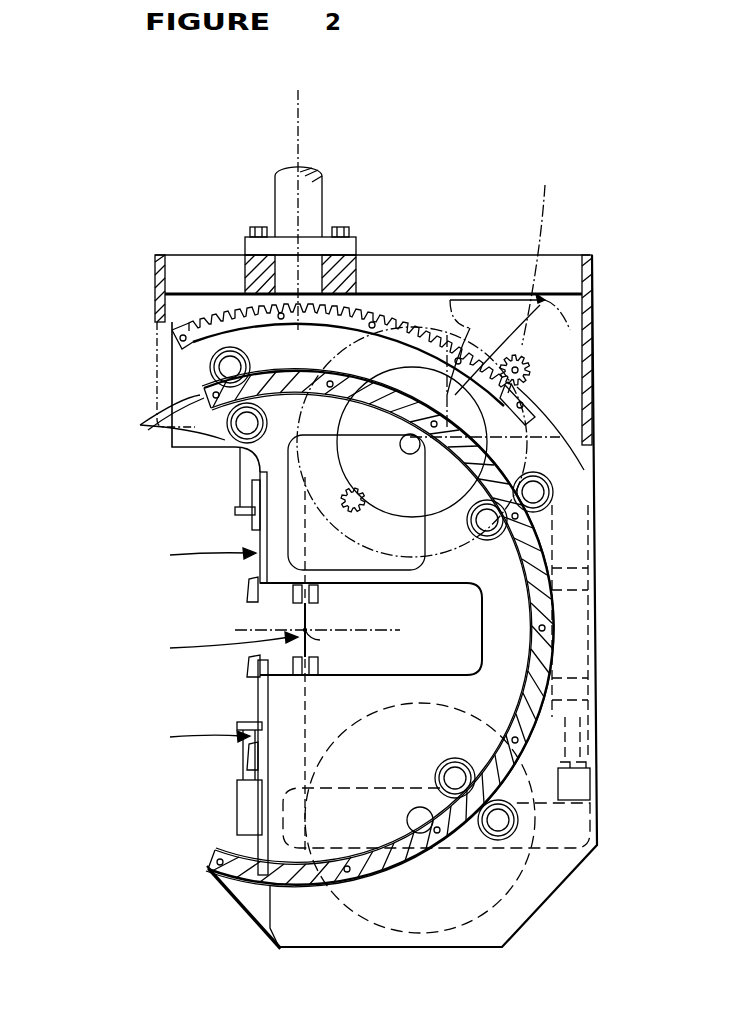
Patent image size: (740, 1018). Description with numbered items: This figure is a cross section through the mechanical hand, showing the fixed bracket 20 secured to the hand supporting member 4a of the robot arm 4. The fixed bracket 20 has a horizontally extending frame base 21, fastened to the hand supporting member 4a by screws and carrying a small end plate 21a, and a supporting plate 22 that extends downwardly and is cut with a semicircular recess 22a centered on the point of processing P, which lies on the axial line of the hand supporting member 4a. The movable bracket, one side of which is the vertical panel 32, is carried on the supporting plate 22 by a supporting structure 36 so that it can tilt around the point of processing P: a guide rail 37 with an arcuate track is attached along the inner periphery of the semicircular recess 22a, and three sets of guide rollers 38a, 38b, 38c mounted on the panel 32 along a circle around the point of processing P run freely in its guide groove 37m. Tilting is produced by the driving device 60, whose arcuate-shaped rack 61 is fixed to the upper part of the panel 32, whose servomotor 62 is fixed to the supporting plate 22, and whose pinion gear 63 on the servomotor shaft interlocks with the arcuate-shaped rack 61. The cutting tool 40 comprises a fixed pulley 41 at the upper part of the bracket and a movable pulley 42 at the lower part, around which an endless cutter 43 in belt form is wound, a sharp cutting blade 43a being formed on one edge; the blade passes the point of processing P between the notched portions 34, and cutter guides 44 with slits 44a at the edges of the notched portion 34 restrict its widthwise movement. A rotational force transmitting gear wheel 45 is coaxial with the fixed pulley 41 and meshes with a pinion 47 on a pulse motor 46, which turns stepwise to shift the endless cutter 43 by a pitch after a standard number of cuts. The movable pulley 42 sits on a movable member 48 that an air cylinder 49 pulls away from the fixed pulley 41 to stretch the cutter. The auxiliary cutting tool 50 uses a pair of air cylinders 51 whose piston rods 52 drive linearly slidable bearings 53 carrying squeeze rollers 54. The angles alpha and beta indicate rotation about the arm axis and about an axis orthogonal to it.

The fixed bracket 20 is at (600, 268).
The robot arm 4 is at (318, 186).
The hand supporting member 4a is at (248, 242).
The frame base 21 is at (437, 252).
The rack end plate 21a is at (376, 254).
The supporting plate 22 is at (594, 332).
The semicircular recess 22a is at (212, 856).
The panel 32 is at (582, 466).
The pinion gear 63 is at (530, 370).
The driving device 60 is at (547, 298).
The arcuate-shaped rack 61 is at (452, 330).
The rotational force transmitting gear wheel 45 is at (480, 325).
The servomotor 62 is at (538, 248).
The fixed pulley 41 is at (350, 365).
The pinion 47 is at (345, 498).
The pulse motor 46 is at (258, 522).
The auxiliary cutting tool 50 is at (186, 647).
The notched portion 34 is at (432, 680).
The cutter guide 44 is at (300, 598).
The slit 44a is at (320, 640).
The point of processing P is at (308, 628).
The cutting tool 40 is at (258, 645).
The cutting blade 43a is at (252, 588).
The squeeze roller 54 is at (252, 665).
The linearly slidable bearing 53 is at (258, 690).
The endless cutter 43 is at (248, 748).
The piston rod 52 is at (243, 790).
The air cylinder 51 is at (240, 815).
The guide roller 38a is at (140, 425).
The guide roller 38b is at (510, 525).
The guide roller 38c is at (520, 825).
The movable member 48 is at (360, 788).
The movable pulley 42 is at (505, 940).
The air cylinder 49 is at (598, 622).
The supporting structure 36 is at (308, 893).
The guide groove 37m is at (340, 860).
The guide rail 37 is at (395, 862).
The angle of rotation α alpha is at (318, 122).
The angle of rotation β beta is at (686, 572).